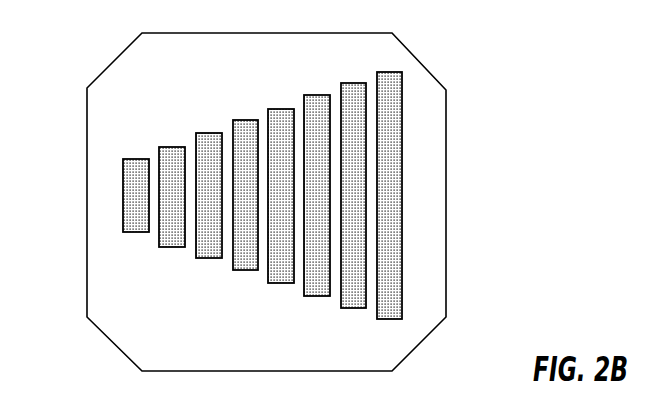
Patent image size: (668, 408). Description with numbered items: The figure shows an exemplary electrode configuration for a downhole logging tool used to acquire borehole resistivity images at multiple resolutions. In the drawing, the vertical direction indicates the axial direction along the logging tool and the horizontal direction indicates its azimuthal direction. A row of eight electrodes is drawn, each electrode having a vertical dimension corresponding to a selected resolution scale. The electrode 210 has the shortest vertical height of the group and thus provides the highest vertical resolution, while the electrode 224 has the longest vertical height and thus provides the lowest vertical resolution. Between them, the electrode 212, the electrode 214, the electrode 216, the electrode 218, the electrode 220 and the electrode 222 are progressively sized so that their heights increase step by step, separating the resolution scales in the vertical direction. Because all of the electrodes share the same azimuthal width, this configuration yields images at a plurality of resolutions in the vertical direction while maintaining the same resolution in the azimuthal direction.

The electrode 210 is at (123, 197).
The electrode 212 is at (175, 147).
The electrode 214 is at (203, 258).
The electrode 216 is at (241, 120).
The electrode 218 is at (277, 283).
The electrode 220 is at (313, 97).
The electrode 222 is at (345, 308).
The electrode 224 is at (387, 73).